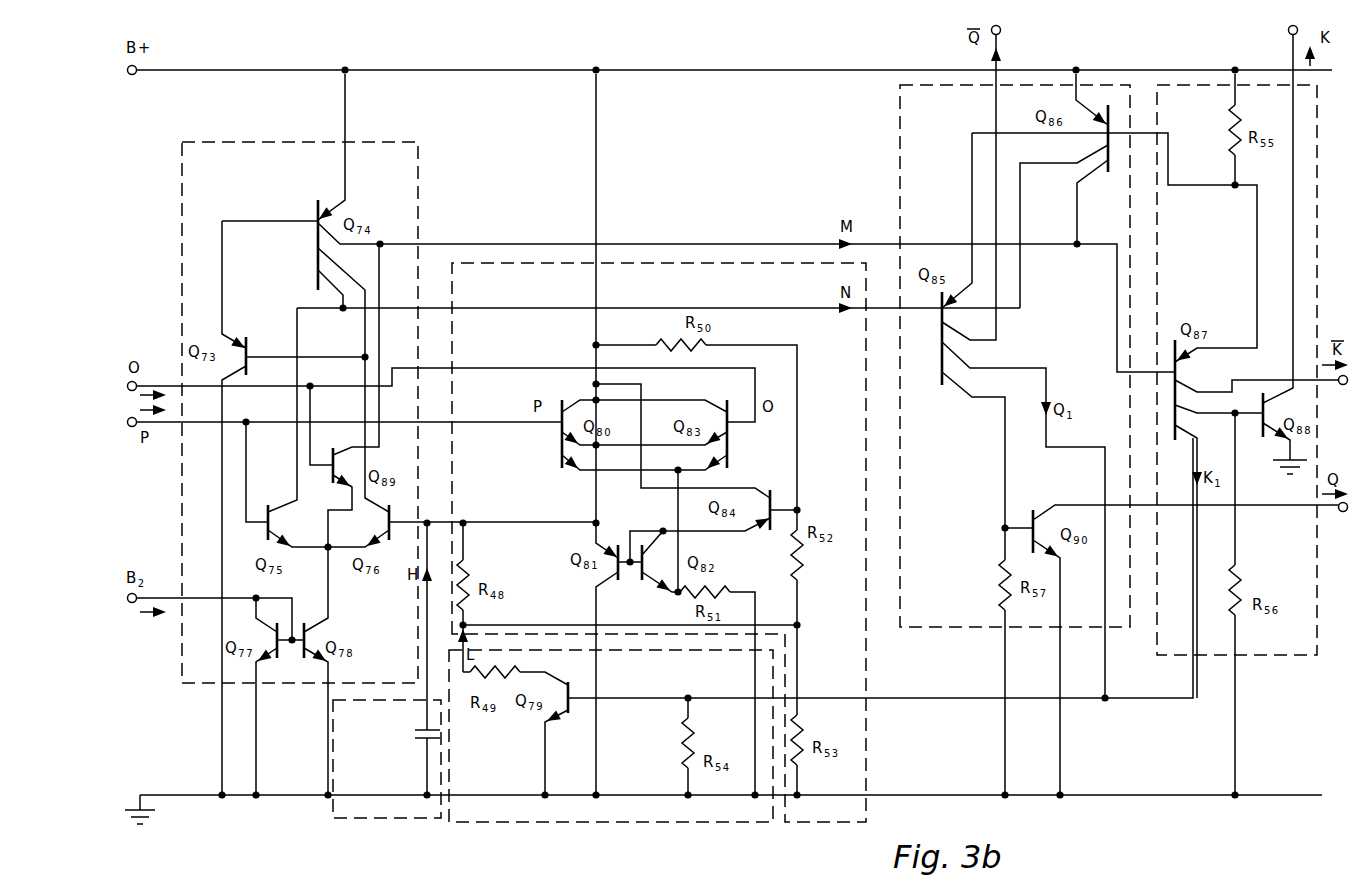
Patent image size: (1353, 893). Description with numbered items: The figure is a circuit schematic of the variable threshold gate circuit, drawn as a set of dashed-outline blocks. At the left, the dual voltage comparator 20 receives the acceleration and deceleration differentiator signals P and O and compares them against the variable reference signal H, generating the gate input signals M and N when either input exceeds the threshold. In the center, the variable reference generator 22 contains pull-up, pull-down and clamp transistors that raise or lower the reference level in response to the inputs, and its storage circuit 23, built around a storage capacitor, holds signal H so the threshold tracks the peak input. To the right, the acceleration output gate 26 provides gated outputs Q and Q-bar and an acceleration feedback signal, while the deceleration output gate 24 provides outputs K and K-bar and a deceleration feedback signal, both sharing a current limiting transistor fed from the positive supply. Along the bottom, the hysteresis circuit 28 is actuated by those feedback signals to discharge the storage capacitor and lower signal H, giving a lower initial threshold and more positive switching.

The dual voltage comparator 20 is at (374, 141).
The variable reference generator 22 is at (692, 263).
The storage circuit 23 is at (406, 822).
The deceleration output gate circuit 24 is at (1189, 85).
The acceleration output gate circuit 26 is at (900, 157).
The hysteresis circuit 28 is at (557, 822).